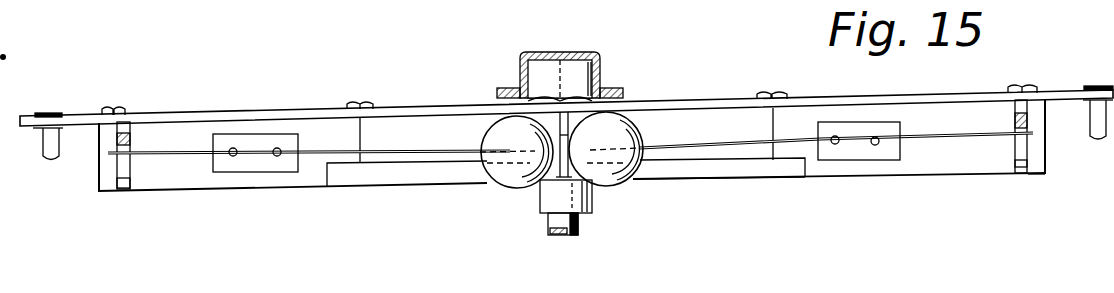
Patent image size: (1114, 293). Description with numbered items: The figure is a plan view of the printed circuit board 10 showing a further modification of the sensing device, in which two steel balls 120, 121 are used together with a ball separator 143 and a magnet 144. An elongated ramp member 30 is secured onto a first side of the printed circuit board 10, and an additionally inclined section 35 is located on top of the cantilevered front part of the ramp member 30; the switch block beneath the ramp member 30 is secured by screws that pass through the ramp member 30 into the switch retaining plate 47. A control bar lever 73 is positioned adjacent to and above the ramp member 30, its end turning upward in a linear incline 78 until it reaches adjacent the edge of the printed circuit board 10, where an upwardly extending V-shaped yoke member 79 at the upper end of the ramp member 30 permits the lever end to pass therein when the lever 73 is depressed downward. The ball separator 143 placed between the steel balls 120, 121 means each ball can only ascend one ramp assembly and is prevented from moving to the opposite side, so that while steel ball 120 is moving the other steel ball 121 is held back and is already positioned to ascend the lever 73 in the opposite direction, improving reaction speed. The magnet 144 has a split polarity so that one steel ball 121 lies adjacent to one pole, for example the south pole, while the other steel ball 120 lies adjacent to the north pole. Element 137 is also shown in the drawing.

The printed circuit board 10 is at (1060, 90).
The ramp member 30 is at (970, 160).
The inclined section 35 is at (703, 182).
The switch retaining plate 47 is at (247, 173).
The control bar lever 73 is at (160, 157).
The linear incline 78 is at (922, 142).
The V-shaped yoke member 79 is at (1022, 173).
The steel ball 120 is at (517, 190).
The steel ball 121 is at (613, 186).
The housing wall 137 is at (1058, 0).
The ball separator 143 is at (570, 133).
The magnet 144 is at (570, 65).